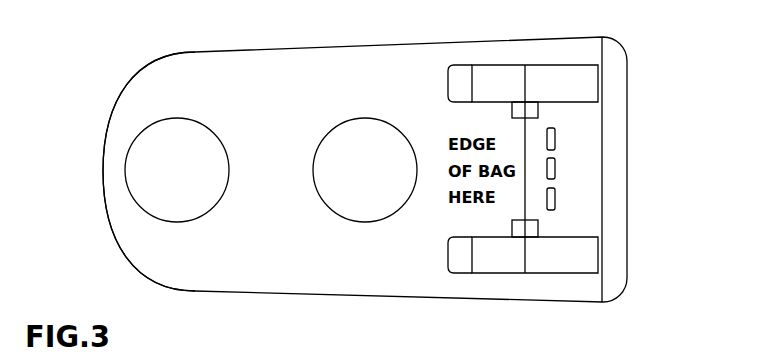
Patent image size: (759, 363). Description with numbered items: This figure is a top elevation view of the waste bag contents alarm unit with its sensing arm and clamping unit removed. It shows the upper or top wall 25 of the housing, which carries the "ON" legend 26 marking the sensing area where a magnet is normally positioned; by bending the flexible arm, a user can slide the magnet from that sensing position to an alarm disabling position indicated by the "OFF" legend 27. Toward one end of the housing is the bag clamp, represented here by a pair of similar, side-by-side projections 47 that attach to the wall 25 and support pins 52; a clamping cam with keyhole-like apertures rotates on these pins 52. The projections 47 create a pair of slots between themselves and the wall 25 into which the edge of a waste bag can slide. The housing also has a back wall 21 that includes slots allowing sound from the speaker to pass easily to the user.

The back wall 21 is at (617, 173).
The upper or top wall 25 is at (157, 80).
The ON legend 26 is at (138, 168).
The OFF legend 27 is at (368, 200).
The projections 47 is at (562, 83).
The pins 52 is at (525, 110).